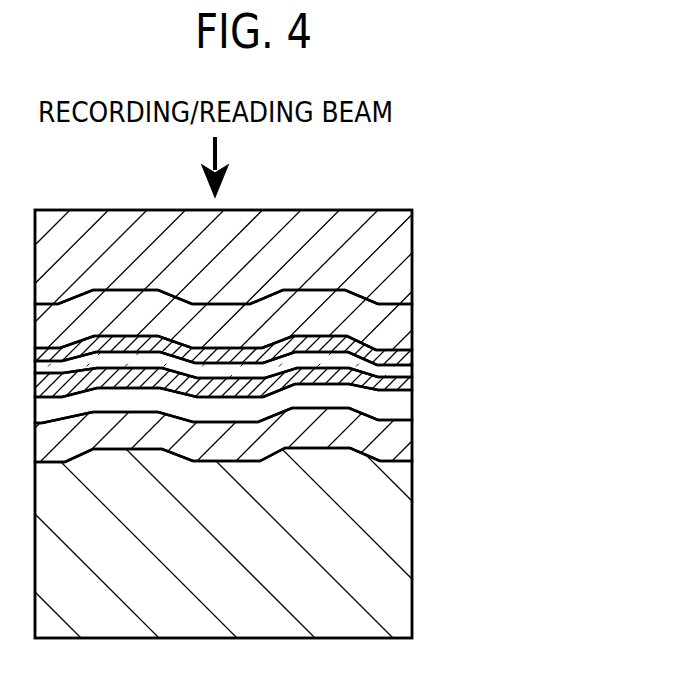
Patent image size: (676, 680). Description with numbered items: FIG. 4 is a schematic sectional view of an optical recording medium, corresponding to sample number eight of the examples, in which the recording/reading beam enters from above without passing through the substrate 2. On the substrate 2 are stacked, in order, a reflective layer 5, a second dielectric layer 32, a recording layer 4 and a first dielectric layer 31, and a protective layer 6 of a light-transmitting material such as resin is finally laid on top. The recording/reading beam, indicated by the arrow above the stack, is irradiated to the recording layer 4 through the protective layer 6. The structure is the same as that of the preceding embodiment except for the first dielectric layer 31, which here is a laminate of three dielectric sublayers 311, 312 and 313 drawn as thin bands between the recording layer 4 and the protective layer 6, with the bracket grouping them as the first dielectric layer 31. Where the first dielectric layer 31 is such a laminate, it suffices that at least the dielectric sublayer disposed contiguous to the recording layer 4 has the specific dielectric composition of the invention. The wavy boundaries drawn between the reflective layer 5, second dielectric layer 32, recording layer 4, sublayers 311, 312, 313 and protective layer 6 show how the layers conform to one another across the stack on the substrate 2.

The substrate 2 is at (412, 492).
The reflective layer 5 is at (412, 433).
The second dielectric layer 32 is at (412, 410).
The recording layer 4 is at (412, 390).
The dielectric sublayer 311 is at (412, 377).
The dielectric sublayer 312 is at (412, 353).
The dielectric sublayer 313 is at (412, 317).
The first dielectric layer 31 is at (313, 424).
The protective layer 6 is at (412, 265).